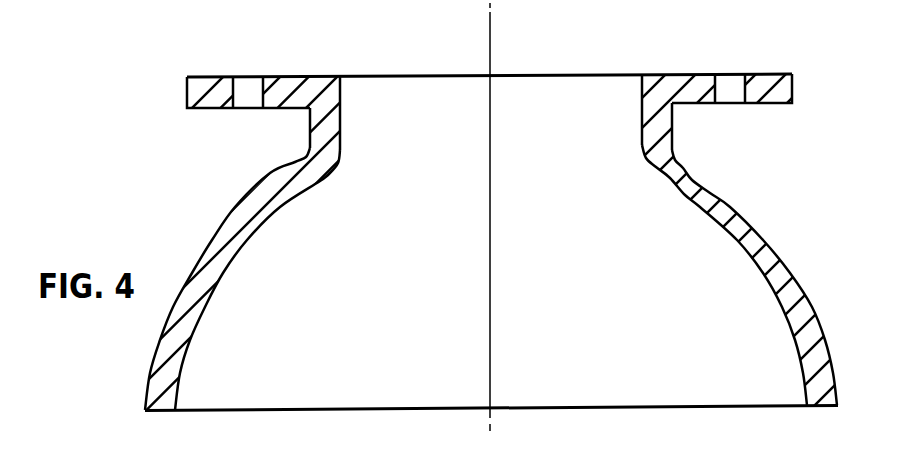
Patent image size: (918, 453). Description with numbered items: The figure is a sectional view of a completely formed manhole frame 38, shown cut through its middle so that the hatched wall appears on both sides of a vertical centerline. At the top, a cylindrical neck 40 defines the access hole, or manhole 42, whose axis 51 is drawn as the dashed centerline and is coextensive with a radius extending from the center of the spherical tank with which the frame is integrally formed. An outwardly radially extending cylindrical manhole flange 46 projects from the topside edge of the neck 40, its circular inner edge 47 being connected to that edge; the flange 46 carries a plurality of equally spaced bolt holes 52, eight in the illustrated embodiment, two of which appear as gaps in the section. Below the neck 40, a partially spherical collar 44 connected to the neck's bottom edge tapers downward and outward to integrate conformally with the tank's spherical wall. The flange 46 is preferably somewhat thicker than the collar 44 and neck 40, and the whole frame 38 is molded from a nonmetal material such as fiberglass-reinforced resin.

The manhole frame 38 is at (153, 208).
The cylindrical neck 40 is at (658, 132).
The access hole 42 is at (458, 133).
The partially spherical collar 44 is at (773, 257).
The manhole flange 46 is at (208, 76).
The circular inner edge 47 is at (313, 80).
The axis 51 is at (491, 320).
The bolt holes 52 is at (242, 88).